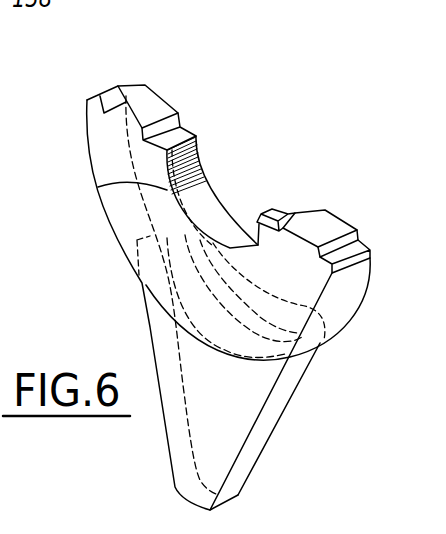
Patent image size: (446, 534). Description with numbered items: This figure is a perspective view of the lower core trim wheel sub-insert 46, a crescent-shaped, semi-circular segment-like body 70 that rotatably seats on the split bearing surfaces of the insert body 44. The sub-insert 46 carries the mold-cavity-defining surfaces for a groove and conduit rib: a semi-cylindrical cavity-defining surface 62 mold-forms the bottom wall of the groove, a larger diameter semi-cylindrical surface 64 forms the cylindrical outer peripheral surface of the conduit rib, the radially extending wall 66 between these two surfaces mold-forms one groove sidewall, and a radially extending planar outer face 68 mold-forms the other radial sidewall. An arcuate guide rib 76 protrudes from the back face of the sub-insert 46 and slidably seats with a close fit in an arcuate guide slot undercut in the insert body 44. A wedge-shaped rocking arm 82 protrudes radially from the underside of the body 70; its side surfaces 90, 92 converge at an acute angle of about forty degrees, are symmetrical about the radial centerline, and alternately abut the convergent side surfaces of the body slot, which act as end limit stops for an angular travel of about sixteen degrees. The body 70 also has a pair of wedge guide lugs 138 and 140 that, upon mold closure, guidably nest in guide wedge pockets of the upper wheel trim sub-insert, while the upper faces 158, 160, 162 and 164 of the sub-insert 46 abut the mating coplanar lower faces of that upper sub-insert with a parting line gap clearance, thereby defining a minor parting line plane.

The sub-insert 46 is at (112, 68).
The semi-cylindrical cavity-defining surface 62 is at (103, 188).
The larger diameter semi-cylindrical surface 64 is at (202, 181).
The radially extending wall 66 is at (212, 148).
The radially extending planar outer face 68 is at (95, 136).
The semi-circular segment-like body 70 is at (116, 231).
The arcuate guide rib 76 is at (253, 285).
The wedge-shaped rocking arm 82 is at (226, 460).
The side surface of rocking arm 90 is at (161, 343).
The side surface of rocking arm 92 is at (283, 393).
The wedge guide lug 138 is at (152, 100).
The wedge guide lug 140 is at (325, 217).
The upper face 158 is at (385, 223).
The upper face 160 is at (293, 207).
The upper face 162 is at (187, 127).
The upper face 164 is at (120, 86).
The insert body 44 is at (11, 524).